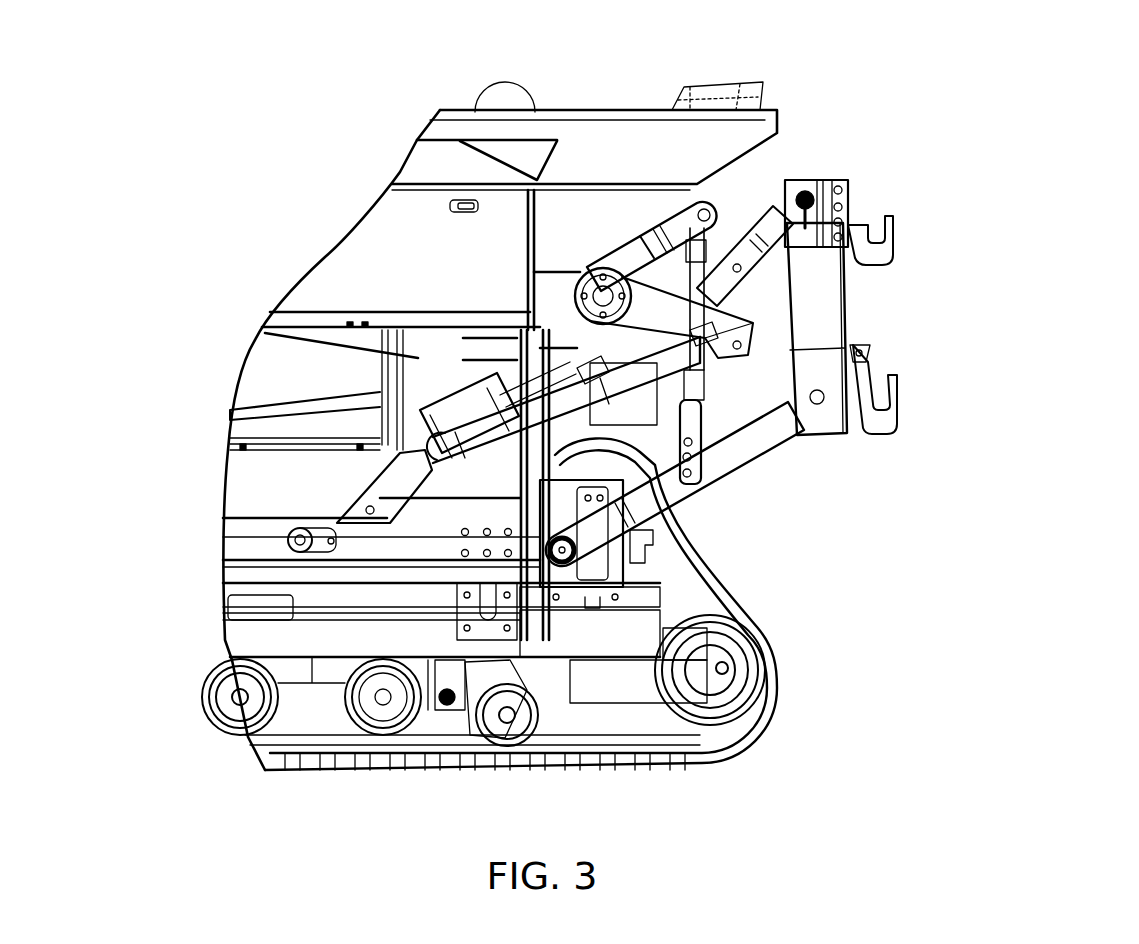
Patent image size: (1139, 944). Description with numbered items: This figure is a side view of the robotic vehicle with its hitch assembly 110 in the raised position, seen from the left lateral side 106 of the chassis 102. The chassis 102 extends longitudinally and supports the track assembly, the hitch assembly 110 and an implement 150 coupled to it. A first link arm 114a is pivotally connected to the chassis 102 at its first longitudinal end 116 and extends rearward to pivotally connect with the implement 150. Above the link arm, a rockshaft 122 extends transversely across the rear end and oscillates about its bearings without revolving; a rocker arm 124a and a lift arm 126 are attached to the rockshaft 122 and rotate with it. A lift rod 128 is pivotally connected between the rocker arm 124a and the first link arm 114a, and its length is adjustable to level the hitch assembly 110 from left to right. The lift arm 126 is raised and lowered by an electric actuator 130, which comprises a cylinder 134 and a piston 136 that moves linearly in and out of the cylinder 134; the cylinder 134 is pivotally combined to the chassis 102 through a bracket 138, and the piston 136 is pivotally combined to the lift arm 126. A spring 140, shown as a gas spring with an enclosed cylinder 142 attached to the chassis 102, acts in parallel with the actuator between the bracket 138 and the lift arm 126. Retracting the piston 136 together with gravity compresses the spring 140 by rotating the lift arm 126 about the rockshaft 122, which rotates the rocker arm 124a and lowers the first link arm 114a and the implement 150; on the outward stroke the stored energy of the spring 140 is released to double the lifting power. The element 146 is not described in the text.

The chassis 102 is at (268, 537).
The first lateral side 106 is at (905, 685).
The hitch assembly 110 is at (767, 166).
The first link arm 114a is at (733, 453).
The first longitudinal end 116 is at (580, 560).
The rockshaft 122 is at (600, 295).
The rocker arm 124a is at (652, 250).
The lift arm 126 is at (648, 248).
The lift rod 128 is at (740, 337).
The electric actuator 130 is at (243, 400).
The cylinder 134 is at (508, 375).
The piston 136 is at (627, 355).
The bracket 138 is at (387, 487).
The spring 140 is at (480, 460).
The cylinder 142 is at (500, 453).
The lift cylinder 146 is at (700, 478).
The implement 150 is at (817, 272).